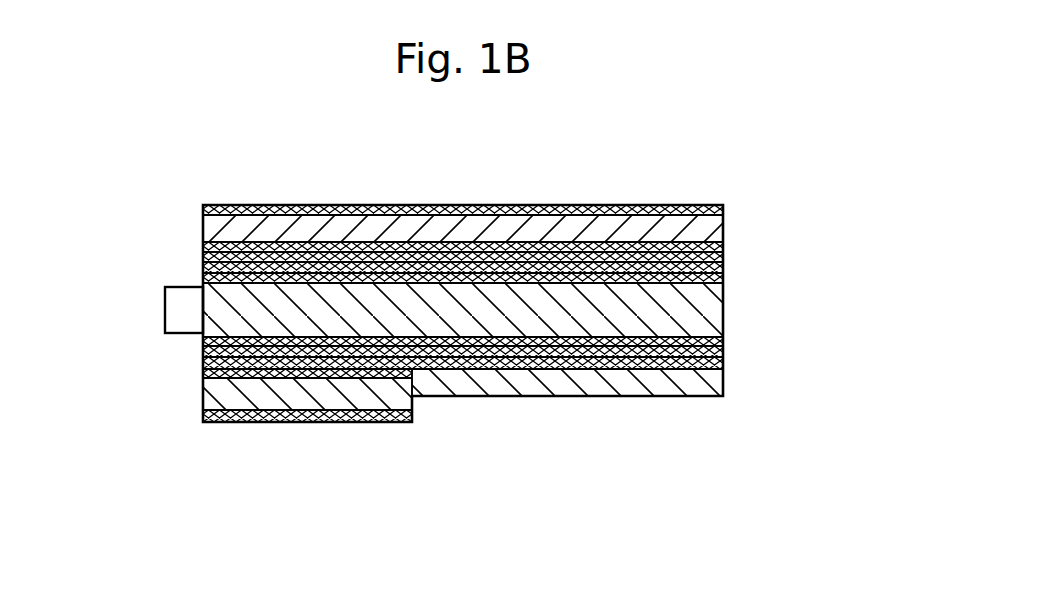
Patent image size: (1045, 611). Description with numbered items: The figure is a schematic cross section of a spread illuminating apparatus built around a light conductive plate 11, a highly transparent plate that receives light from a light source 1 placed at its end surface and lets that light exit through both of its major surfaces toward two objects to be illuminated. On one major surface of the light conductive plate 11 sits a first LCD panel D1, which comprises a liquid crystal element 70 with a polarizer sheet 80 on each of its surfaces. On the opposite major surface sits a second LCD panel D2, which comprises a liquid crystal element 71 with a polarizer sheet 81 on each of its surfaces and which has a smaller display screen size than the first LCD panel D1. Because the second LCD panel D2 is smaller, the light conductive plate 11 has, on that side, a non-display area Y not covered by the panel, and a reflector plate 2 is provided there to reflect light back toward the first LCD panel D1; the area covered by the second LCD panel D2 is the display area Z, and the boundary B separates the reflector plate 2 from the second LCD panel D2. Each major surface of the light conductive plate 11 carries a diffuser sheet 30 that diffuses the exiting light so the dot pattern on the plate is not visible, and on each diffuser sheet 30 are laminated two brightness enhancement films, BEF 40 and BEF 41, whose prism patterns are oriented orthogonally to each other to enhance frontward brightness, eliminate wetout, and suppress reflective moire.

The light source 1 is at (188, 307).
The reflector plate 2 is at (725, 385).
The light conductive plate 11 is at (683, 318).
The diffuser sheet 30 is at (725, 277).
The BEF (brightness enhancement film) 40 is at (725, 268).
The BEF (brightness enhancement film) 41 is at (725, 257).
The liquid crystal element 70 is at (726, 222).
The liquid crystal element 71 is at (347, 387).
The polarizer sheet 80 is at (712, 210).
The polarizer sheet 81 is at (228, 372).
The boundary B is at (409, 437).
The non-display area Y is at (725, 445).
The display area Z is at (417, 503).
The first LCD panel D1 is at (199, 252).
The second LCD panel D2 is at (199, 368).